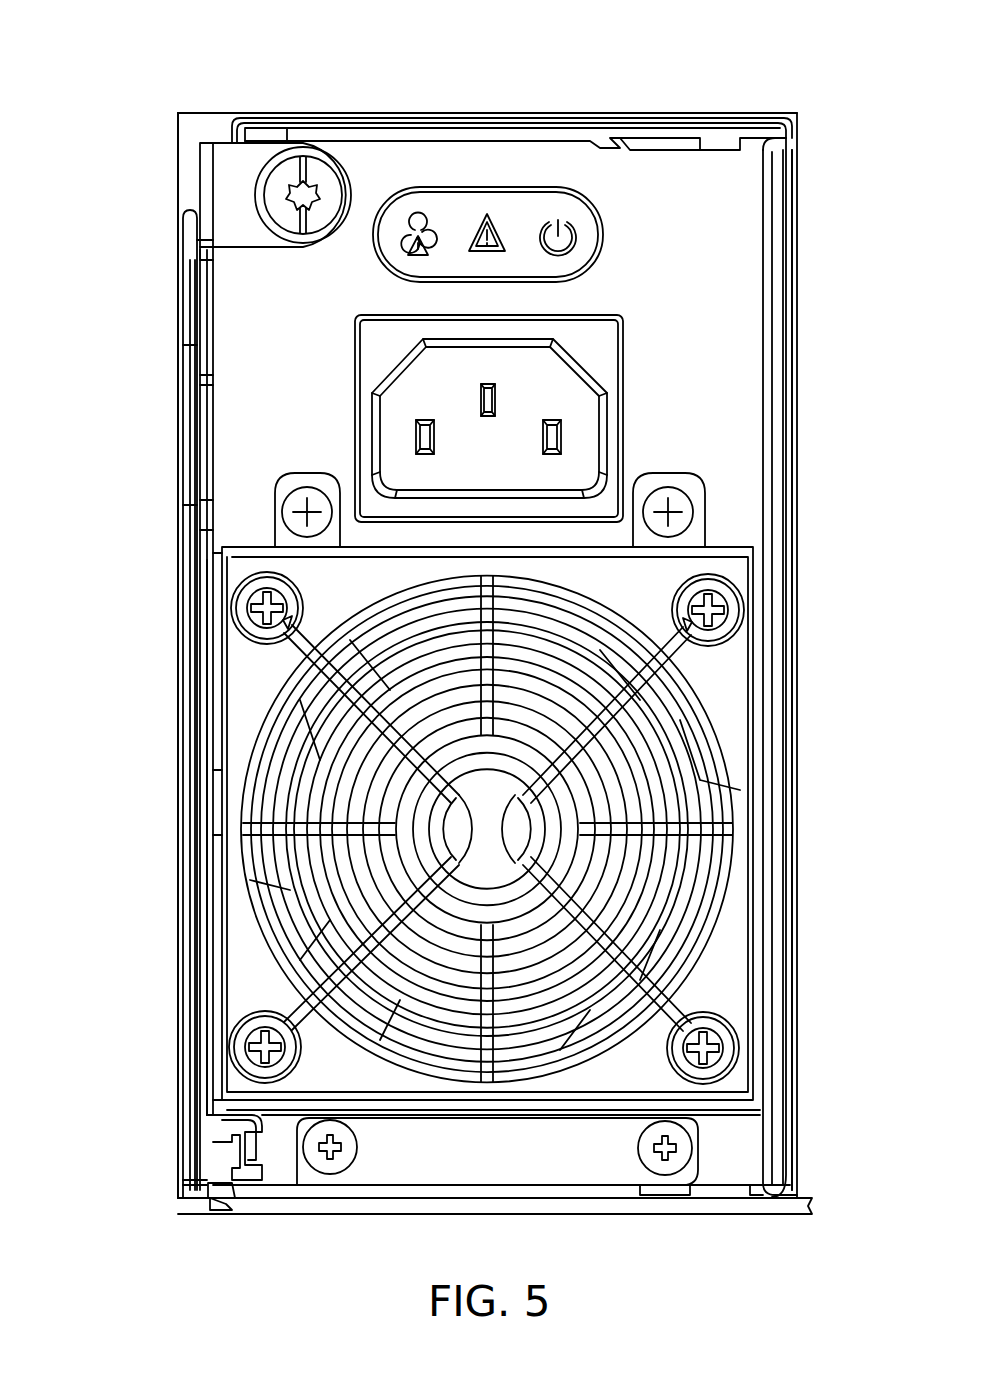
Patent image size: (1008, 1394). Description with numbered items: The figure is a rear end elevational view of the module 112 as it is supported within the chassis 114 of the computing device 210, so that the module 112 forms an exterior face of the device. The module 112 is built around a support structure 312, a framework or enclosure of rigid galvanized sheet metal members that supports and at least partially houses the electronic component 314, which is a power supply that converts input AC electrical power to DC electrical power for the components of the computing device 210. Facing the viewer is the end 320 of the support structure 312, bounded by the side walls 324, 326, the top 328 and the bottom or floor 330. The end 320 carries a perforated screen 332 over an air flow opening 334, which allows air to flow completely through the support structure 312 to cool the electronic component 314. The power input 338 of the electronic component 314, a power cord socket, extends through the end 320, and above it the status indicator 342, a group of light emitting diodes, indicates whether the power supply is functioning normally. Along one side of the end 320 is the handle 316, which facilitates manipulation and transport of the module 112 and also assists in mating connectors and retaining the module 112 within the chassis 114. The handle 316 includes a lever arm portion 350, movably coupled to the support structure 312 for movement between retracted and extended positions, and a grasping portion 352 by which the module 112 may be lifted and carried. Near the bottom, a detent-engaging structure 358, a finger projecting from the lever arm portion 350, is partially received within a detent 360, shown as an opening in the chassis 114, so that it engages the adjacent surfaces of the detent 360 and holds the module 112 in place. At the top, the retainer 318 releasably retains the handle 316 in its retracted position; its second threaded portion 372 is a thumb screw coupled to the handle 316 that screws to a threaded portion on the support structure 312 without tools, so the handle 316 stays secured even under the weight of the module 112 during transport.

The computing device 210 is at (100, 79).
The module 112 is at (534, 121).
The chassis 114 is at (690, 1215).
The support structure 312 is at (680, 118).
The electronic component 314 is at (623, 345).
The handle 316 is at (191, 301).
The retainer 318 is at (349, 166).
The end 320 is at (748, 337).
The side wall 324 is at (178, 546).
The side wall 326 is at (797, 527).
The top 328 is at (605, 118).
The bottom or floor 330 is at (770, 1185).
The perforated screen 332 is at (680, 930).
The air flow opening 334 is at (668, 892).
The power input 338 is at (612, 372).
The status indicator 342 is at (592, 235).
The lever arm portion 350 is at (196, 772).
The grasping portion 352 is at (195, 346).
The detent-engaging structure 358 is at (205, 1195).
The detent 360 is at (178, 1197).
The second threaded portion 372 is at (268, 172).